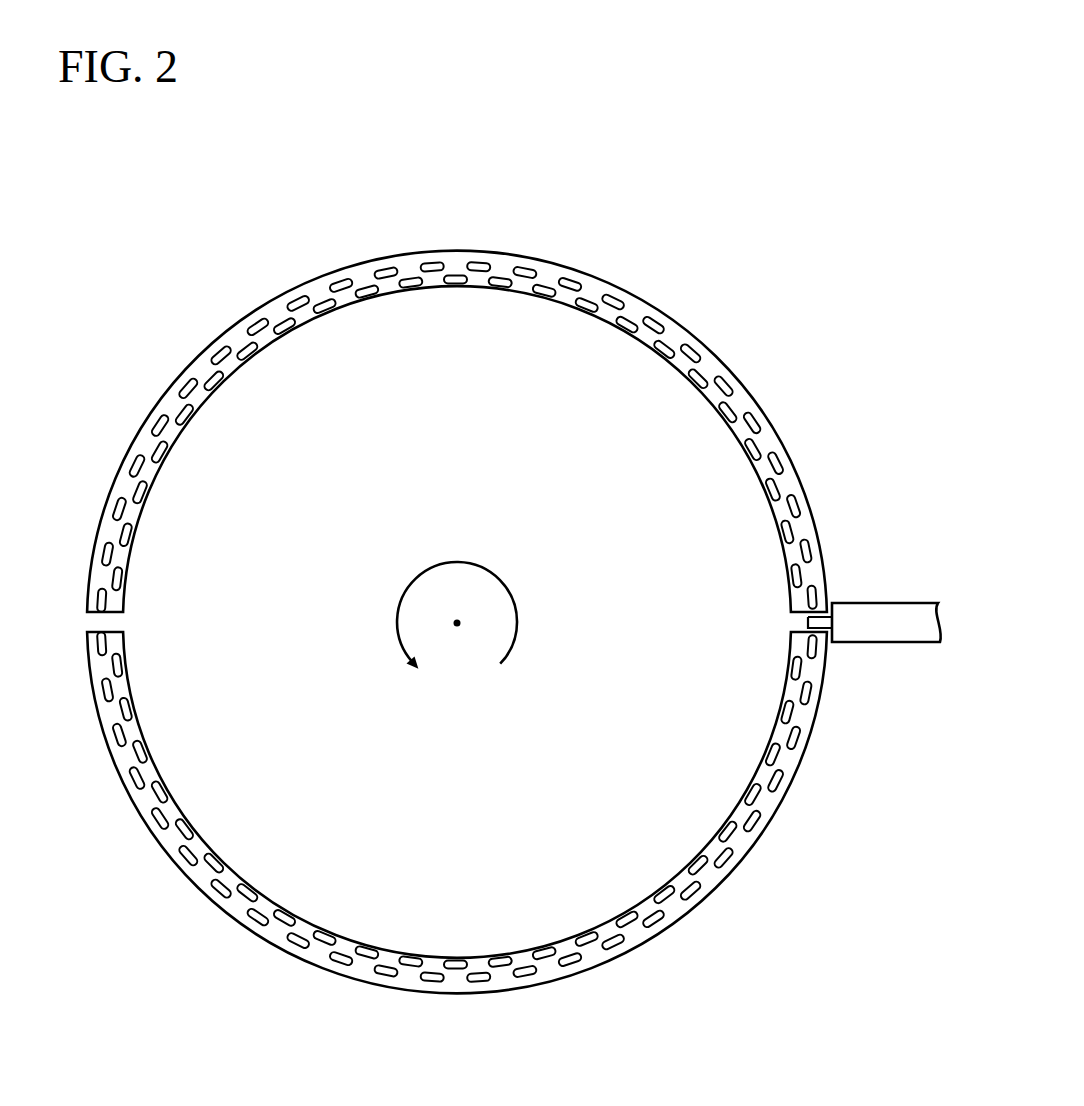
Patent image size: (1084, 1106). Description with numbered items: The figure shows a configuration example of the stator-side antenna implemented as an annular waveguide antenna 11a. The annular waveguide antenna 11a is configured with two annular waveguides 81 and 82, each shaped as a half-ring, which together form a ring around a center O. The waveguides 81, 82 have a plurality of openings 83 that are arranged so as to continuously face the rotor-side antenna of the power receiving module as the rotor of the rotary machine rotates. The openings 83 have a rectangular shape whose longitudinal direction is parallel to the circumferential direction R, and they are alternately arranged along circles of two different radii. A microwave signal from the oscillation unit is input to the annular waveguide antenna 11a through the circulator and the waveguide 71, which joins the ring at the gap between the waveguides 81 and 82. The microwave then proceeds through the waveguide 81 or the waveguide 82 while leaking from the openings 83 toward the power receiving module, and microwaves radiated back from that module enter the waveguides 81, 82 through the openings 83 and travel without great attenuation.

The annular waveguide antenna 11a is at (614, 195).
The annular waveguide 81 is at (728, 368).
The annular waveguide 82 is at (797, 770).
The openings 83 is at (684, 360).
The waveguide 71 is at (888, 603).
The circumferential direction R is at (470, 562).
The center of rotation O is at (457, 626).